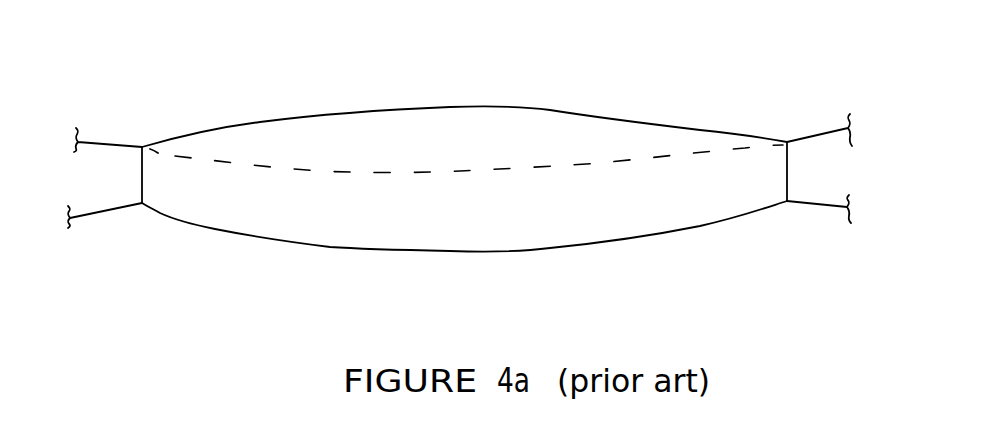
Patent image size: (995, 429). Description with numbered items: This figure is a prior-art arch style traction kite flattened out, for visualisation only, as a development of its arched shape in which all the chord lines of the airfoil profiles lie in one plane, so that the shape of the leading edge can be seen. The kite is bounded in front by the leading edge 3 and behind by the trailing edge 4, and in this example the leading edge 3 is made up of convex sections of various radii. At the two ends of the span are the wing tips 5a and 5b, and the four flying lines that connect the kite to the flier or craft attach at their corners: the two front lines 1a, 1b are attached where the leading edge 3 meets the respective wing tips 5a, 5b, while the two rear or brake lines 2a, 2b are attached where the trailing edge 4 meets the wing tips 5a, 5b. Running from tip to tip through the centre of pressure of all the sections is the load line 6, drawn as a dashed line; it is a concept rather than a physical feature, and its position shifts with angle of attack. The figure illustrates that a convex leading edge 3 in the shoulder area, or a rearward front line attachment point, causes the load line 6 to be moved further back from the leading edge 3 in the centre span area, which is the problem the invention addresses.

The front line 1a is at (110, 143).
The front line 1b is at (808, 130).
The rear or brake line 2a is at (107, 212).
The rear or brake line 2b is at (812, 207).
The leading edge 3 is at (458, 105).
The trailing edge 4 is at (463, 252).
The wing tip 5a is at (142, 183).
The wing tip 5b is at (787, 170).
The load line 6 is at (405, 170).